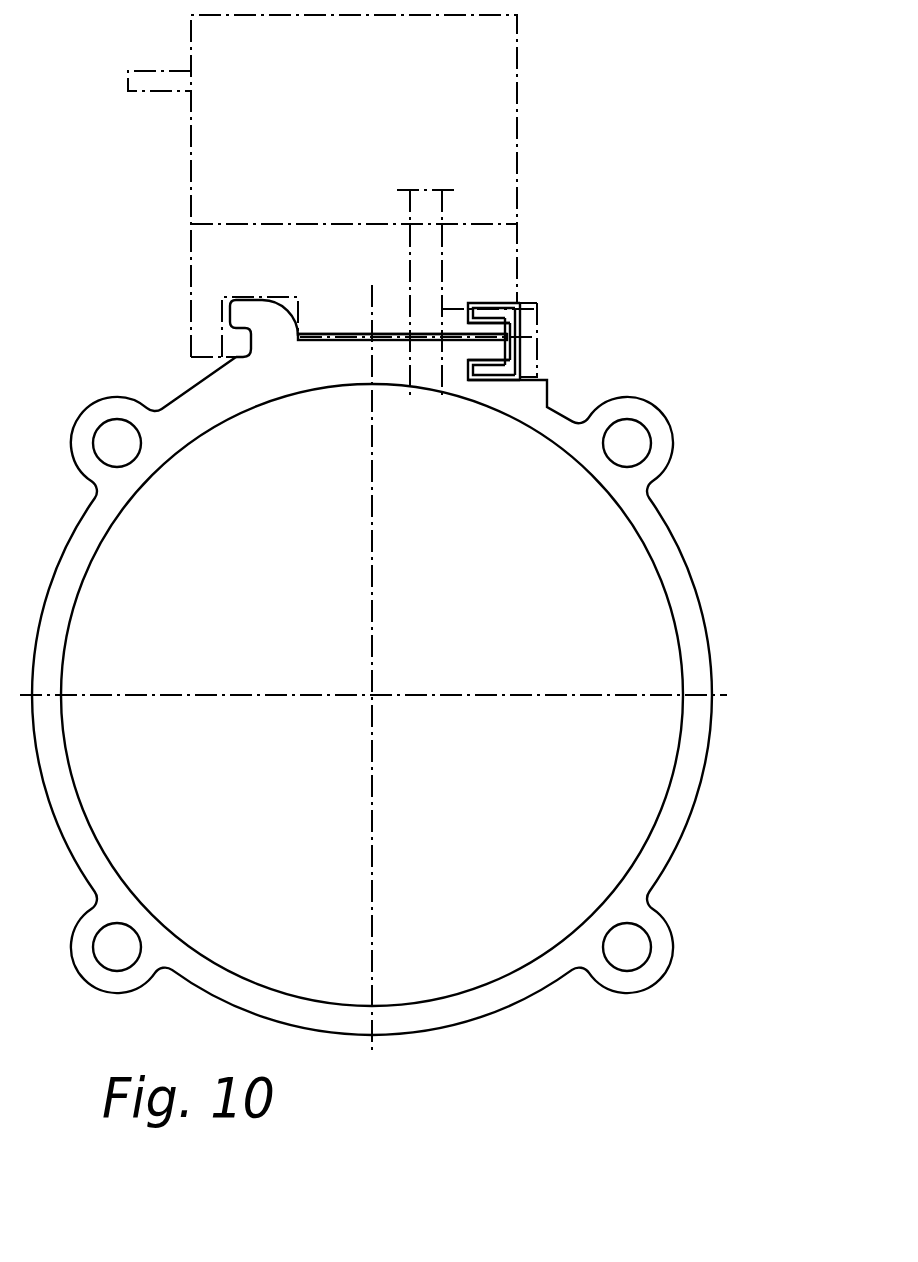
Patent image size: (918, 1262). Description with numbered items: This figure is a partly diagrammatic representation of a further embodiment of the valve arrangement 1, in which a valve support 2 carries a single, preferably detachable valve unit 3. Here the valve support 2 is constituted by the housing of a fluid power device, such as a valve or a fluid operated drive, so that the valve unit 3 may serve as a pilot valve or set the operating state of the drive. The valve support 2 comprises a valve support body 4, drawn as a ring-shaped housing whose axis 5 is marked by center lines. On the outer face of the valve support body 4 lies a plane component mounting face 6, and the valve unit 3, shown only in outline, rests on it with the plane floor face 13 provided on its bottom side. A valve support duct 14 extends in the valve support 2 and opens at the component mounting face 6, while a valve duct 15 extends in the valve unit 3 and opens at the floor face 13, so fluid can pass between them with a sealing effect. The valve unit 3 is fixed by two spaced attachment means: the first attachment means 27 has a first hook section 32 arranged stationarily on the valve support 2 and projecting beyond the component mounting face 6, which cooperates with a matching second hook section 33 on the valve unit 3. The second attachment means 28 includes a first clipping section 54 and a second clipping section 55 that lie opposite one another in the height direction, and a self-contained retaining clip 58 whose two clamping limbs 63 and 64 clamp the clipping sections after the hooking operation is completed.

The valve arrangement 1 is at (682, 360).
The valve support 2 is at (680, 572).
The valve unit 3 is at (200, 122).
The valve support body 4 is at (688, 791).
The axis 5 is at (373, 694).
The component mounting face 6 is at (318, 334).
The floor face 13 is at (336, 342).
The valve support duct 14 is at (423, 377).
The valve duct 15 is at (400, 240).
The first attachment means 27 is at (218, 330).
The second attachment means 28 is at (545, 312).
The first hook section 32 is at (246, 300).
The second hook section 33 is at (236, 350).
The first clipping section 54 is at (487, 348).
The second clipping section 55 is at (488, 330).
The retaining clip 58 is at (528, 347).
The clamping limb 63 is at (500, 368).
The clamping limb 64 is at (502, 312).